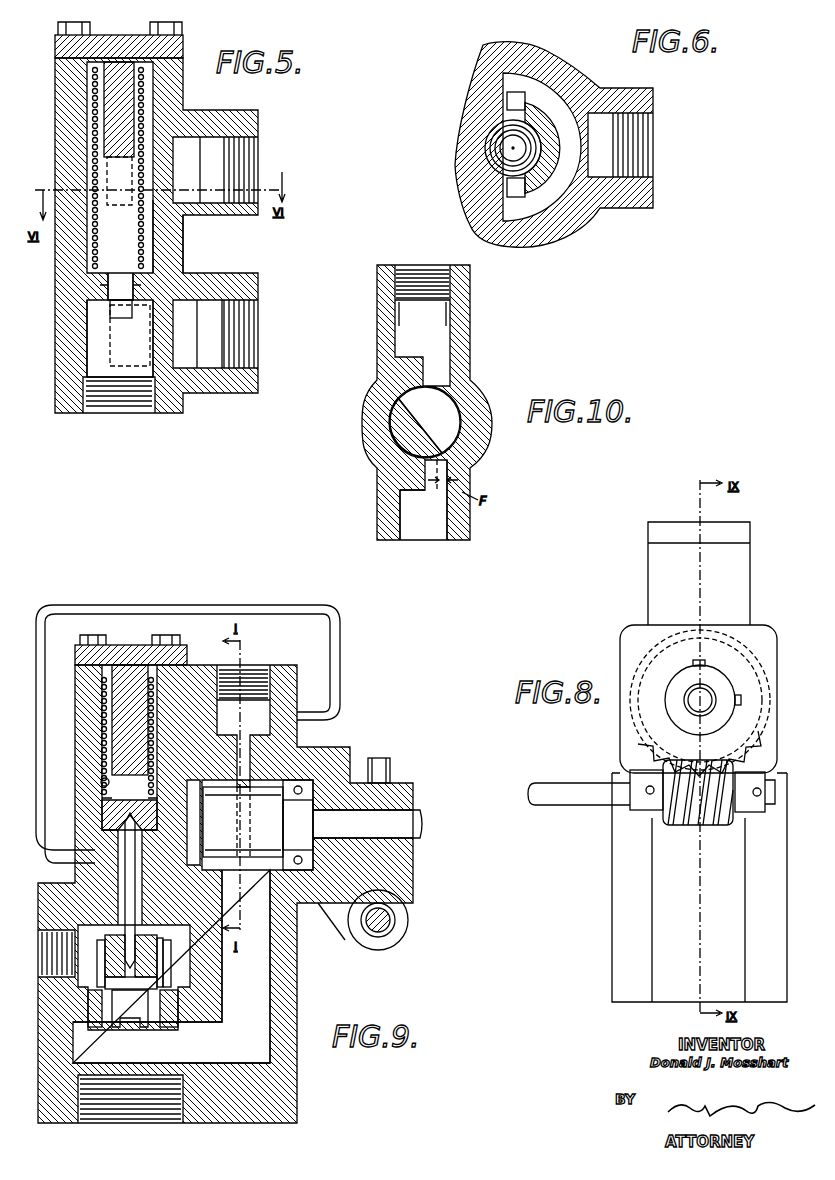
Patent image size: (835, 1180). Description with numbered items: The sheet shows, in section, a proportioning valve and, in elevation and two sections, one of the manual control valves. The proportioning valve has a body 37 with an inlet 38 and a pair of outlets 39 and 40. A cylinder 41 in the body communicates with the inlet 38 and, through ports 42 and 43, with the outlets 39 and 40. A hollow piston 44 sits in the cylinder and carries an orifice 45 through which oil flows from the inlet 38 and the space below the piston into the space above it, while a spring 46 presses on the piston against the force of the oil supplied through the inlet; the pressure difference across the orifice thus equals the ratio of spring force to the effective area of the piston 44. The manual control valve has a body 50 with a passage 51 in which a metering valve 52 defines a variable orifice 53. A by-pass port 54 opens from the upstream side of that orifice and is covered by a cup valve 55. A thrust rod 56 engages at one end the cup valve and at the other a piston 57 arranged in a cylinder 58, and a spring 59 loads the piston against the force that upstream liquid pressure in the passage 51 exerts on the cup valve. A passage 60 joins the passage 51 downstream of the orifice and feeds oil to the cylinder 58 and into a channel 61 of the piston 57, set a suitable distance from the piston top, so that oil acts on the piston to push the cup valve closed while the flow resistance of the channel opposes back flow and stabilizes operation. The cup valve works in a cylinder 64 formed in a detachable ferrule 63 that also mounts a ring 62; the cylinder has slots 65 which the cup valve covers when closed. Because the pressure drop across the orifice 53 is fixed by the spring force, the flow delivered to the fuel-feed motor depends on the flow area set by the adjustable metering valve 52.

In FIG. 5, the body 37 is at (70, 250).
In FIG. 6, the body 37 is at (533, 55).
In FIG. 5, the inlet 38 is at (118, 397).
In FIG. 5, the outlet 39 is at (218, 338).
In FIG. 5, the outlet 40 is at (222, 162).
In FIG. 6, the outlet 40 is at (608, 163).
In FIG. 5, the cylinder 41 is at (90, 317).
In FIG. 6, the cylinder 41 is at (485, 157).
In FIG. 5, the port 42 is at (118, 318).
In FIG. 5, the port 43 is at (118, 186).
In FIG. 6, the port 43 is at (516, 102).
In FIG. 5, the hollow piston 44 is at (158, 249).
In FIG. 6, the hollow piston 44 is at (490, 127).
In FIG. 5, the orifice 45 is at (118, 288).
In FIG. 6, the orifice 45 is at (510, 160).
In FIG. 5, the spring 46 is at (100, 152).
In FIG. 6, the spring 46 is at (497, 160).
In FIG. 10, the body 50 is at (387, 475).
In FIG. 8, the body 50 is at (628, 883).
In FIG. 9, the body 50 is at (283, 1003).
In FIG. 10, the passage 51 is at (420, 522).
In FIG. 9, the passage 51 is at (250, 1043).
In FIG. 10, the metering valve 52 is at (452, 410).
In FIG. 9, the metering valve 52 is at (312, 825).
In FIG. 10, the variable orifice 53 is at (462, 478).
In FIG. 9, the by-pass port 54 is at (125, 1000).
In FIG. 9, the cup valve 55 is at (157, 965).
In FIG. 9, the thrust rod 56 is at (128, 905).
In FIG. 9, the piston 57 is at (110, 808).
In FIG. 9, the cylinder 58 is at (103, 780).
In FIG. 9, the spring 59 is at (105, 733).
In FIG. 9, the passage 60 is at (36, 800).
In FIG. 9, the channel 61 is at (78, 862).
In FIG. 9, the ring 62 is at (145, 1005).
In FIG. 9, the detachable ferrule 63 is at (163, 1017).
In FIG. 9, the cylinder 64 is at (160, 948).
In FIG. 9, the slots 65 is at (98, 978).